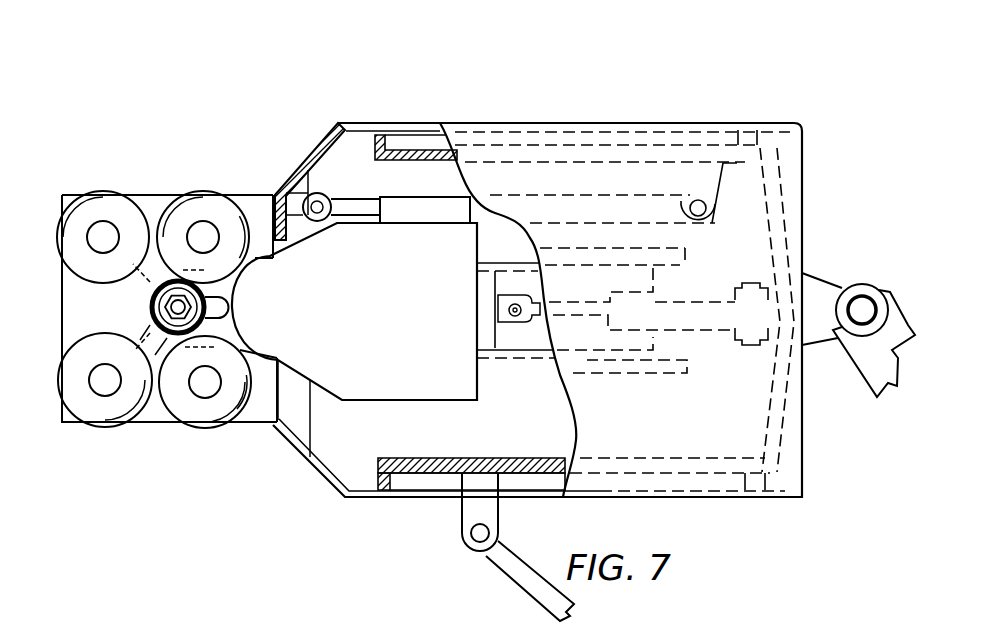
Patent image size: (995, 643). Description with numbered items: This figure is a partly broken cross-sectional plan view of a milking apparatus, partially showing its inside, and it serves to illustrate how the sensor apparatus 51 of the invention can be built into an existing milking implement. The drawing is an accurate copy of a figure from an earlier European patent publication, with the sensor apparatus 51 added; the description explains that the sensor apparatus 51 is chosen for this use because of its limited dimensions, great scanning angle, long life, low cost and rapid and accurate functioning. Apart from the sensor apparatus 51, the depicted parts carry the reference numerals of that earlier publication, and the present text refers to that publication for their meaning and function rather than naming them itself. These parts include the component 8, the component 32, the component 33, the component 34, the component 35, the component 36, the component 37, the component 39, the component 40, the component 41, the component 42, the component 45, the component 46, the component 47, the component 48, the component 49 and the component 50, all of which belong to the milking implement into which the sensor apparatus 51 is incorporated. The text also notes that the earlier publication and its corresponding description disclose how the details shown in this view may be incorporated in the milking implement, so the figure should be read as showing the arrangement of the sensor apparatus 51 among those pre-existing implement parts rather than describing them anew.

The hydraulic cylinder block 8 is at (460, 372).
The mounting plate 32 is at (870, 357).
The housing 33 is at (778, 203).
The housing wall 34 is at (352, 124).
The pivot ring 35 is at (863, 306).
The lever arm 36 is at (530, 583).
The lever pivot 37 is at (473, 502).
The guide block 39 is at (412, 142).
The piston rod 40 is at (437, 207).
The pin 41 is at (684, 174).
The pivot pin 42 is at (320, 197).
The roller 45 is at (103, 408).
The roller 46 is at (102, 203).
The roller 47 is at (198, 410).
The roller 48 is at (208, 203).
The piston 49 is at (690, 310).
The central hub 50 is at (148, 305).
The sensor apparatus 51 is at (414, 361).